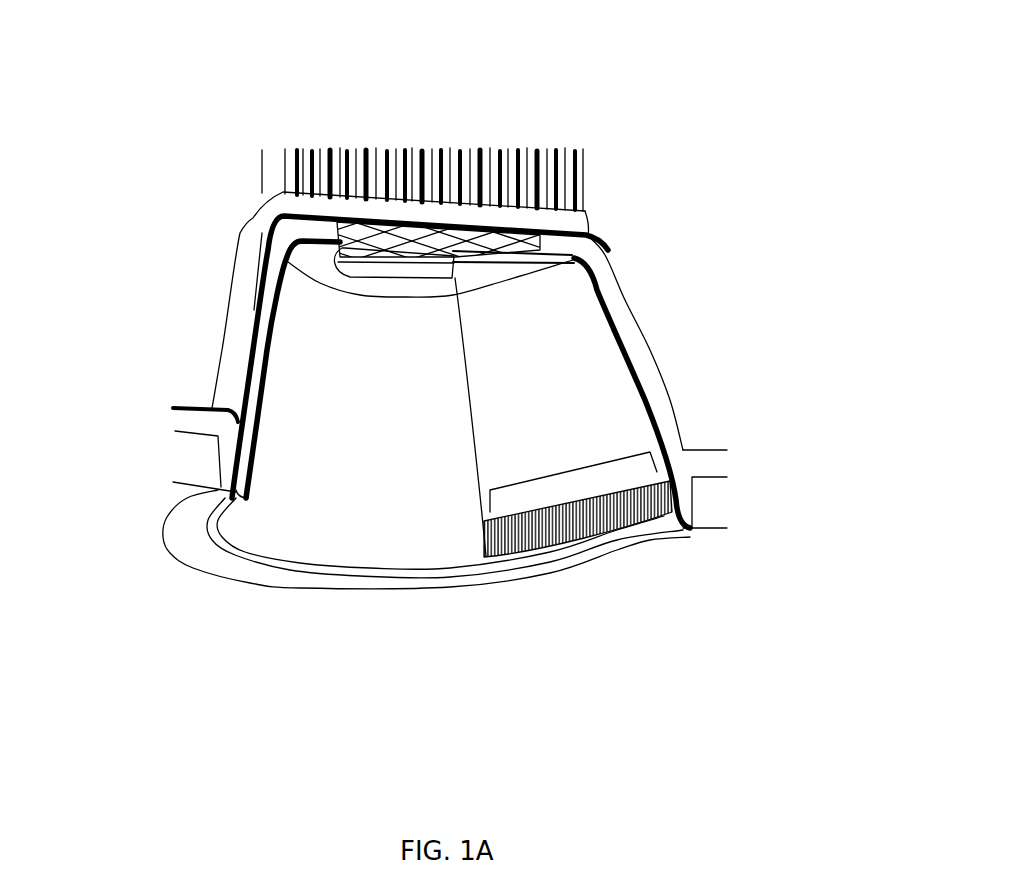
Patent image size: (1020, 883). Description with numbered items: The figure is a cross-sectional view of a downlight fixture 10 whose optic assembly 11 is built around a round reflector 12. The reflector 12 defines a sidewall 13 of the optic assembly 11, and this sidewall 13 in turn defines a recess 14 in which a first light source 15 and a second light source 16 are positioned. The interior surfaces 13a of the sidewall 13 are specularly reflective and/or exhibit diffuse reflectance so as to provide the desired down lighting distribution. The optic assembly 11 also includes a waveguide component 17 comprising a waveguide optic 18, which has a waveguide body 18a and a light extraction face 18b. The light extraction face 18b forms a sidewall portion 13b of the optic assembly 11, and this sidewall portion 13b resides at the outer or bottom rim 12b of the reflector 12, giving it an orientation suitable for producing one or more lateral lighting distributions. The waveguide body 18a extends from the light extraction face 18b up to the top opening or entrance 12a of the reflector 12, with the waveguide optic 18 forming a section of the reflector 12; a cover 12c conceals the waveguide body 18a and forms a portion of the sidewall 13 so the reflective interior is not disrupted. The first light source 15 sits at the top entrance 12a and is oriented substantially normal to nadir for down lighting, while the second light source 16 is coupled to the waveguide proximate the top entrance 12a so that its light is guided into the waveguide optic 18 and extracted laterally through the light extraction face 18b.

The downlight fixture 10 is at (274, 90).
The optic assembly 11 is at (217, 271).
The round reflector 12 is at (277, 290).
The top opening or entrance 12a is at (372, 268).
The outer or bottom rim 12b is at (185, 545).
The cover 12c is at (507, 417).
The sidewall 13 is at (430, 340).
The interior surfaces 13a is at (440, 533).
The sidewall portion 13b is at (577, 469).
The recess 14 is at (364, 548).
The first light source 15 is at (340, 224).
The second light source 16 is at (516, 237).
The waveguide component 17 is at (642, 278).
The waveguide optic 18 is at (652, 355).
The waveguide body 18a is at (628, 365).
The light extraction face 18b is at (594, 507).